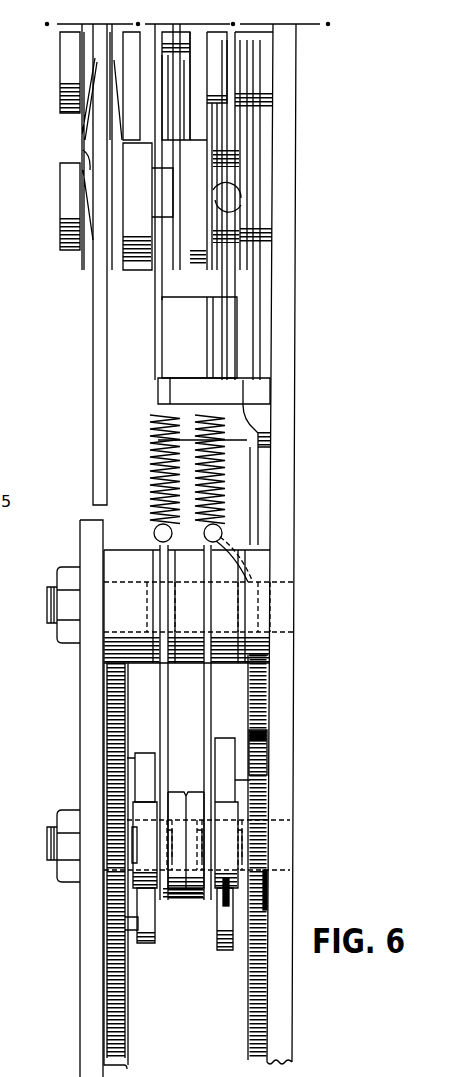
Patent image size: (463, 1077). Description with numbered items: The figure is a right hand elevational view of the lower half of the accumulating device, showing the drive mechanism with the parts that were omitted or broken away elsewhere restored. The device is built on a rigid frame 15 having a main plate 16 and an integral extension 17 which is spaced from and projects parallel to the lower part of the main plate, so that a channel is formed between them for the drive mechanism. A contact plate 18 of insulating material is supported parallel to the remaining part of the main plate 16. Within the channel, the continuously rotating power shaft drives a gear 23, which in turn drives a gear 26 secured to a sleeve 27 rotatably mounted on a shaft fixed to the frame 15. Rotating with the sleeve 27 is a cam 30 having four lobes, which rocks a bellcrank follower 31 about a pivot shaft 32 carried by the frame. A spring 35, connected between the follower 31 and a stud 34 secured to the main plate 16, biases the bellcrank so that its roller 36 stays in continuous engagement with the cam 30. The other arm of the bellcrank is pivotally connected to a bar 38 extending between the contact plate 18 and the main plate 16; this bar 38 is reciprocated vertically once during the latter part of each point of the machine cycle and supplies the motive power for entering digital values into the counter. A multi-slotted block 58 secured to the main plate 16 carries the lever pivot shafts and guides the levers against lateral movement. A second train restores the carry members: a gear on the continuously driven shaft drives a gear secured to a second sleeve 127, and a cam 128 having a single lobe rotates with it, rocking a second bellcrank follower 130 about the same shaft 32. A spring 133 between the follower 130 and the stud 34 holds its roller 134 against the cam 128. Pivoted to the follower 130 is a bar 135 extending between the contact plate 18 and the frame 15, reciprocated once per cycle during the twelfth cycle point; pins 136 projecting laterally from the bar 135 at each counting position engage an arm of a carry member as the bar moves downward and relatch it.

The rigid frame 15 is at (307, 493).
The main plate 16 is at (285, 677).
The integral extension 17 is at (82, 973).
The contact plate 18 is at (97, 420).
The gear 23 is at (247, 1008).
The gear 26 is at (258, 772).
The sleeve 27 is at (267, 908).
The cam 30 is at (223, 948).
The bellcrank follower 31 is at (210, 718).
The pivot shaft 32 is at (50, 612).
The stud 34 is at (267, 387).
The spring 35 is at (220, 478).
The roller 36 is at (227, 888).
The bar 38 is at (255, 543).
The multi-slotted block 58 is at (245, 335).
The second sleeve 127 is at (167, 900).
The cam 128 is at (146, 938).
The bellcrank follower 130 is at (167, 722).
The spring 133 is at (153, 485).
The roller 134 is at (147, 807).
The bar 135 is at (155, 335).
The pin 136 is at (178, 32).